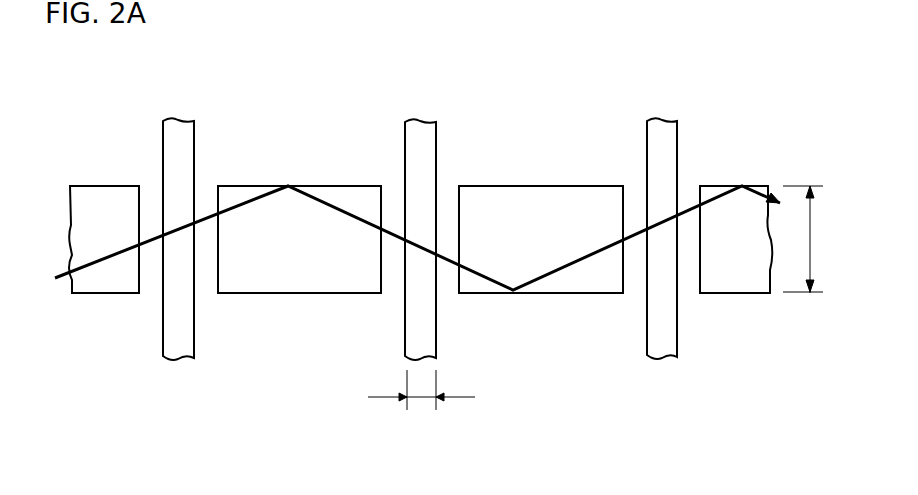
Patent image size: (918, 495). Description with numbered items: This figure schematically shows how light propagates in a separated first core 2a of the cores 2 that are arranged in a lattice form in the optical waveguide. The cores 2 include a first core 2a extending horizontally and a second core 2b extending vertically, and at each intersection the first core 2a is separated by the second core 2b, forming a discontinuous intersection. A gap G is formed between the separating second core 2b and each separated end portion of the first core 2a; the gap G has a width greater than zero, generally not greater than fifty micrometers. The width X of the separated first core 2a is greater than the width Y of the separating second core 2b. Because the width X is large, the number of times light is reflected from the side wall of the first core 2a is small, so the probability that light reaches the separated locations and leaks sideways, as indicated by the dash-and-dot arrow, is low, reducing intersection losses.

The cores 2 is at (420, 216).
The first core 2a is at (582, 197).
The second core 2b is at (660, 147).
The gap G is at (392, 278).
The width of the separated first core X is at (812, 239).
The width of the separating second core Y is at (421, 403).